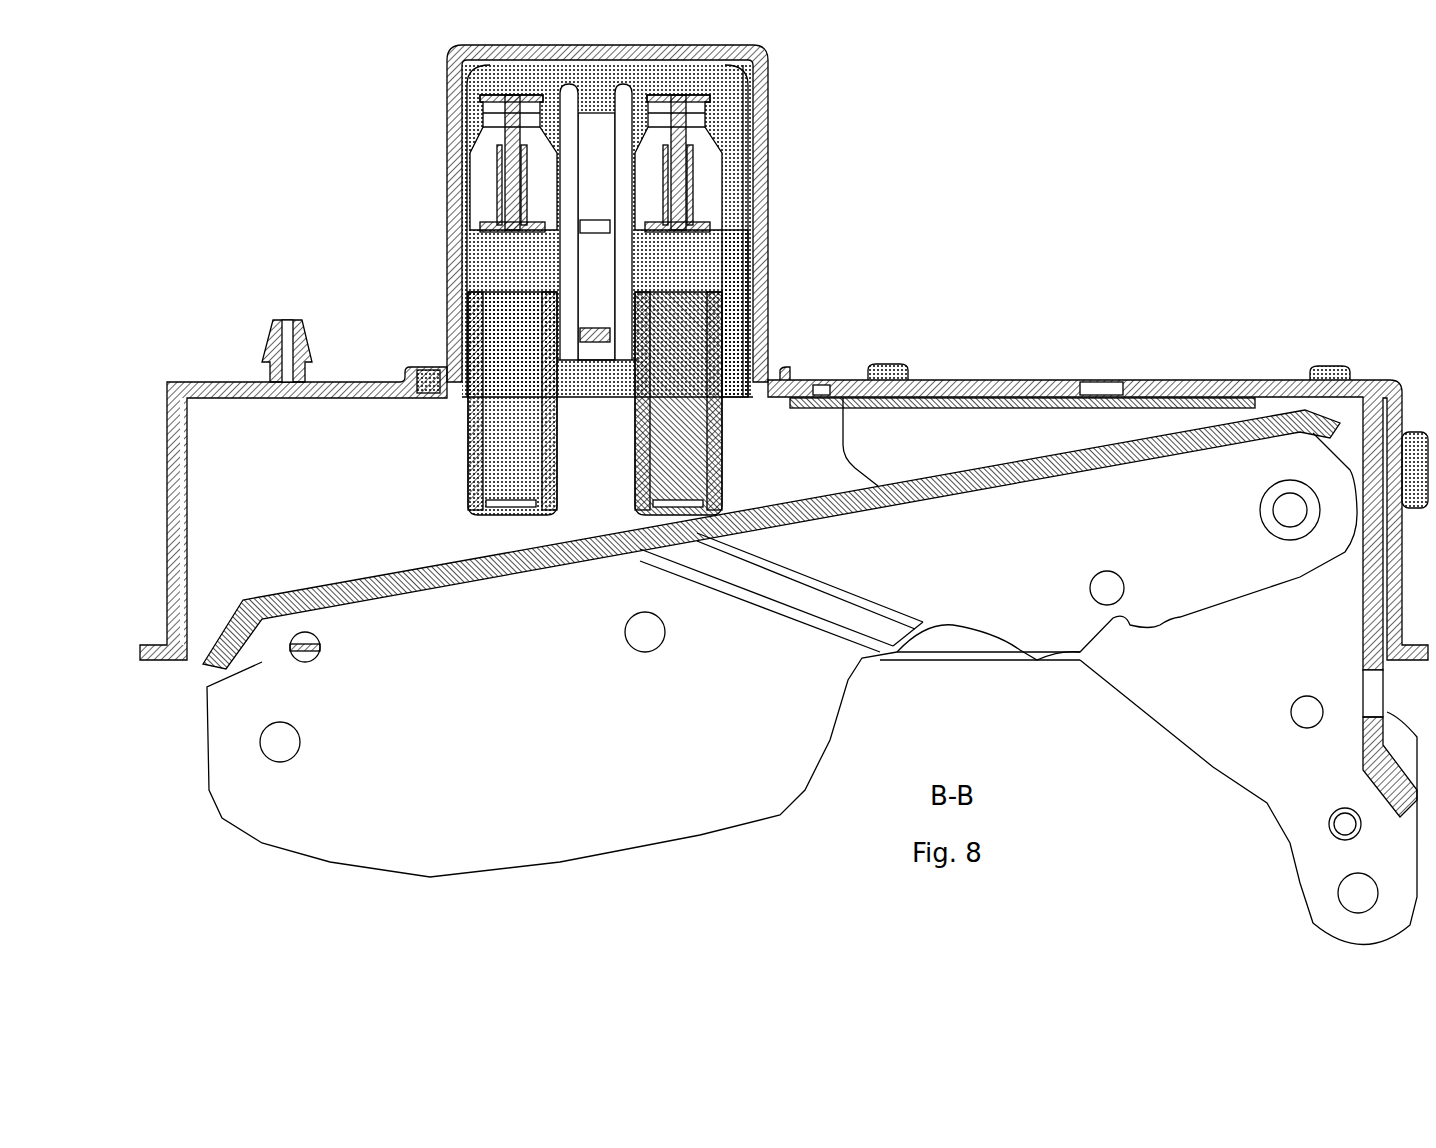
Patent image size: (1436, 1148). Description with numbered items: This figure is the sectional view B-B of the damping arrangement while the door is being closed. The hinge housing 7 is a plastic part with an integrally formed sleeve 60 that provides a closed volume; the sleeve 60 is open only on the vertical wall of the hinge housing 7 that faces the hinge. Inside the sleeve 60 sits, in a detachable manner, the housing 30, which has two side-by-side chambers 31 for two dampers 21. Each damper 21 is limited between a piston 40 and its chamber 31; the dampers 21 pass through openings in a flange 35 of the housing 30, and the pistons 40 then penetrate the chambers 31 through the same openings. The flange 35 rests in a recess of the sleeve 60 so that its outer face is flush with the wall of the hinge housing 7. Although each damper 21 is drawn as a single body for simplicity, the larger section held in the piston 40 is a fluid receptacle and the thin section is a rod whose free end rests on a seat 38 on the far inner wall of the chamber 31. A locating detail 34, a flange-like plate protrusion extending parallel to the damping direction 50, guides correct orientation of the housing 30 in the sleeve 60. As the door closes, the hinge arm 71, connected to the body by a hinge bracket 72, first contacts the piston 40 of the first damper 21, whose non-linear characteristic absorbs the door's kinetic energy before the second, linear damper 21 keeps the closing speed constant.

The hinge housing 7 is at (195, 392).
The damper 21 is at (683, 462).
The housing 30 is at (470, 112).
The chamber 31 is at (705, 183).
The locating detail 34 is at (740, 267).
The flange 35 is at (432, 383).
The seat 38 is at (597, 340).
The piston 40 is at (467, 467).
The damping direction 50 is at (595, 403).
The sleeve 60 is at (760, 84).
The hinge arm 71 is at (407, 600).
The hinge bracket 72 is at (1277, 398).